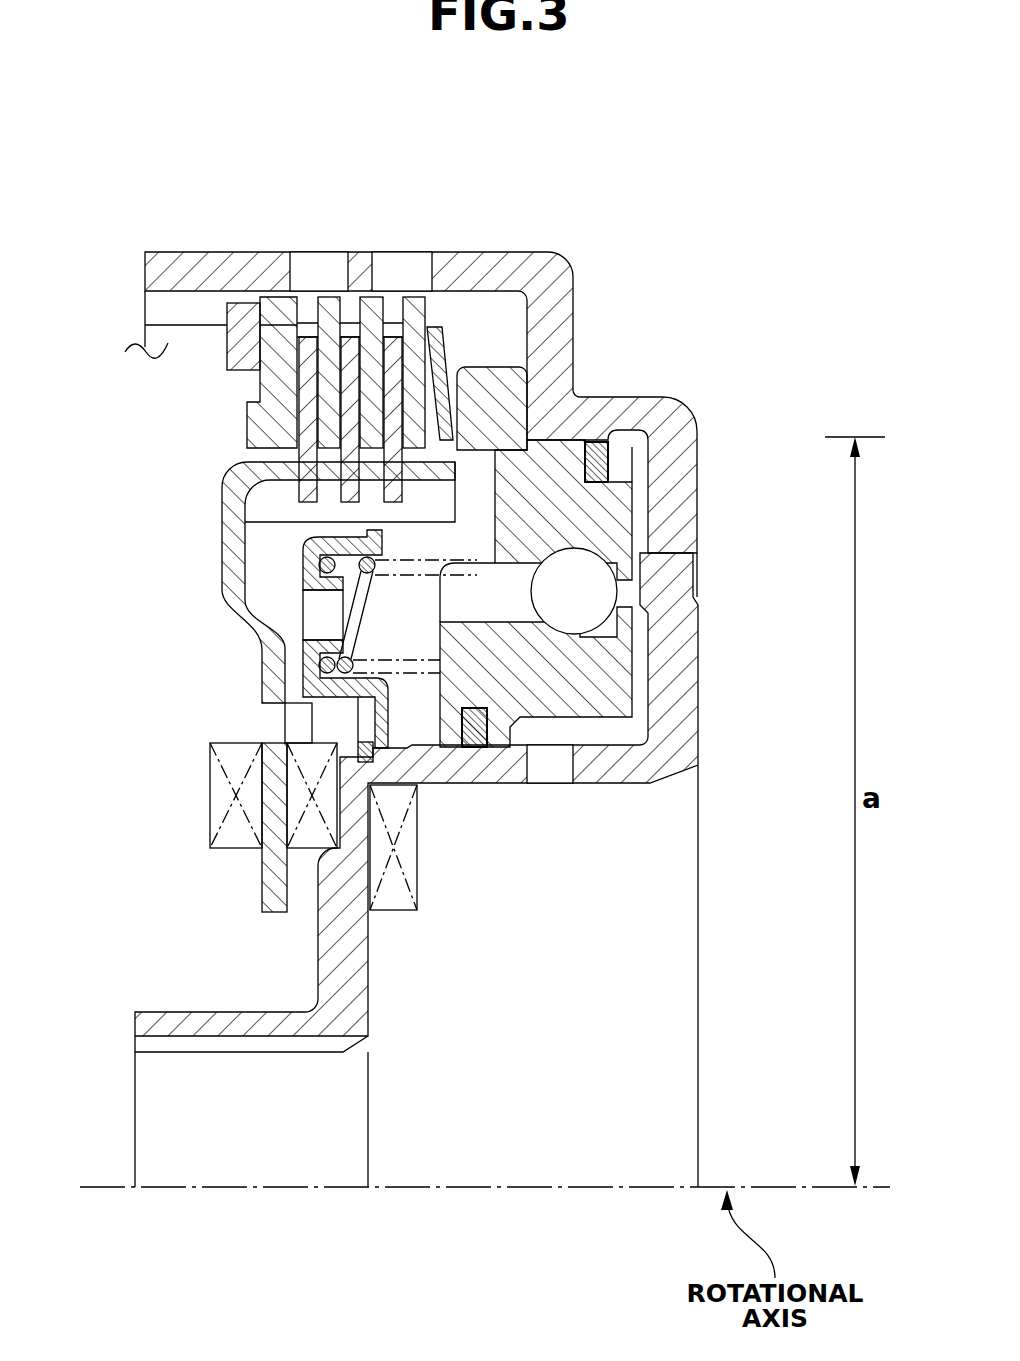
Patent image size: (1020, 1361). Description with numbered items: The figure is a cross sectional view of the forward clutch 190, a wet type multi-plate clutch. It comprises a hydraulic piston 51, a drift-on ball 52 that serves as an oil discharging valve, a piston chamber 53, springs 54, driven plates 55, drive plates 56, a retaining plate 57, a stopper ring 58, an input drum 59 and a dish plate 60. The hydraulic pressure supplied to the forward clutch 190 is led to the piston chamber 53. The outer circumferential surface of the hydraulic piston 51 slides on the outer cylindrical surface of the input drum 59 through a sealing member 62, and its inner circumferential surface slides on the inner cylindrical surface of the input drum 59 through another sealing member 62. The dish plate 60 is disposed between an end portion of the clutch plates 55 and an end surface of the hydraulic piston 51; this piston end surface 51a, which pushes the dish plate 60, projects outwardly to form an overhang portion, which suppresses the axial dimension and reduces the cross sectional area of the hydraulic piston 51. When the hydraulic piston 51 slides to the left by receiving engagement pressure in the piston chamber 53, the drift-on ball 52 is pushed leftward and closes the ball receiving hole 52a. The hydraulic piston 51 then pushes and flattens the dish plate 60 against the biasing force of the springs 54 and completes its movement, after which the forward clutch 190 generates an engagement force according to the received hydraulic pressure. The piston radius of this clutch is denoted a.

The forward clutch 190 is at (408, 230).
The hydraulic piston 51 is at (616, 443).
The piston end surface 51a is at (488, 395).
The drift-on ball 52 is at (583, 583).
The ball receiving hole 52a is at (574, 636).
The piston chamber 53 is at (622, 726).
The springs 54 is at (302, 603).
The driven plates 55 is at (331, 305).
The drive plates 56 is at (290, 468).
The retaining plate 57 is at (250, 423).
The stopper ring 58 is at (230, 358).
The input drum 59 is at (157, 272).
The dish plate 60 is at (443, 352).
The sealing member 62 is at (622, 430).